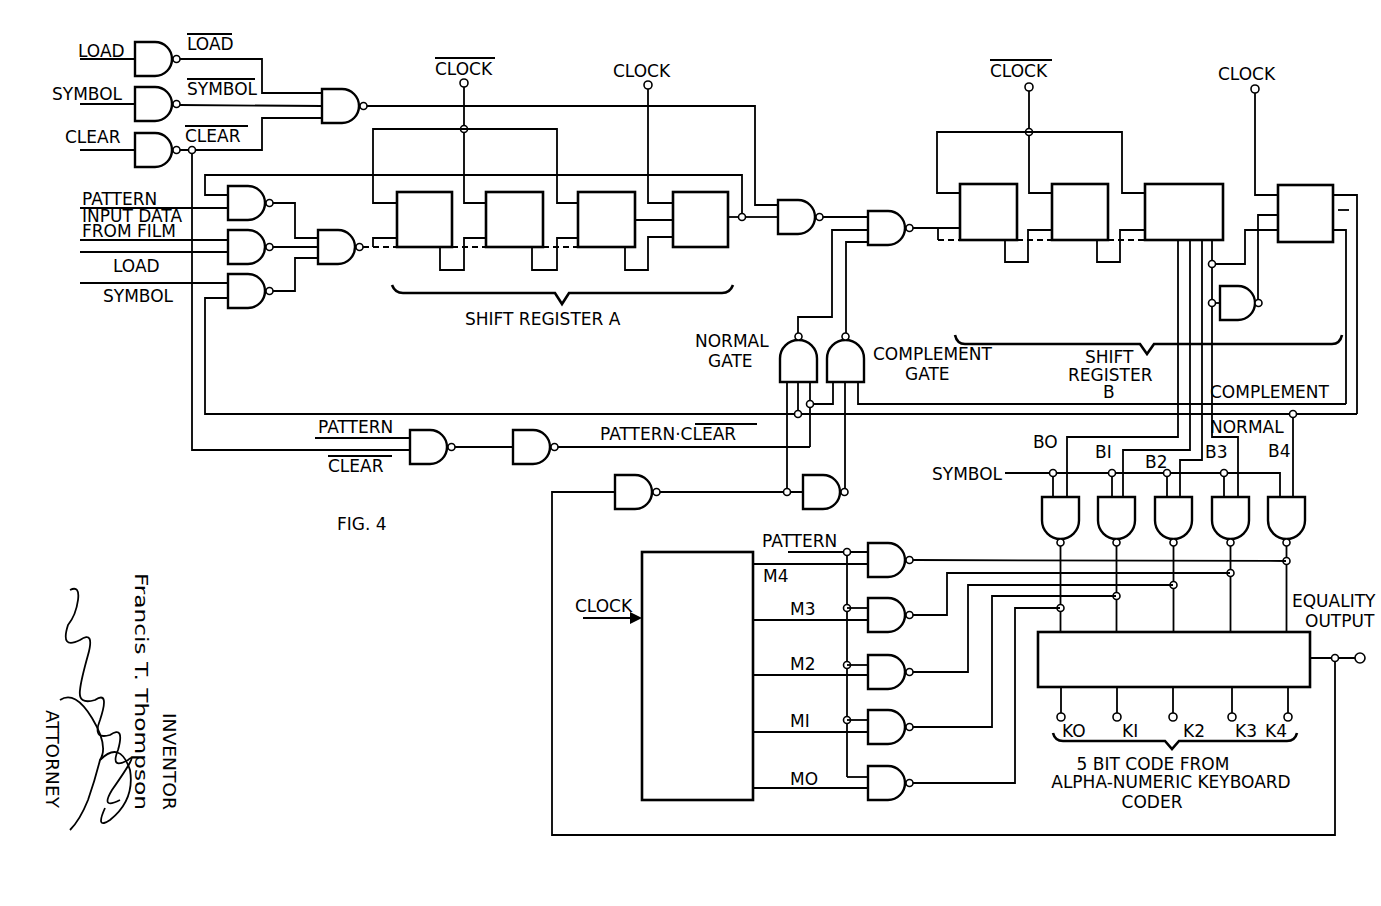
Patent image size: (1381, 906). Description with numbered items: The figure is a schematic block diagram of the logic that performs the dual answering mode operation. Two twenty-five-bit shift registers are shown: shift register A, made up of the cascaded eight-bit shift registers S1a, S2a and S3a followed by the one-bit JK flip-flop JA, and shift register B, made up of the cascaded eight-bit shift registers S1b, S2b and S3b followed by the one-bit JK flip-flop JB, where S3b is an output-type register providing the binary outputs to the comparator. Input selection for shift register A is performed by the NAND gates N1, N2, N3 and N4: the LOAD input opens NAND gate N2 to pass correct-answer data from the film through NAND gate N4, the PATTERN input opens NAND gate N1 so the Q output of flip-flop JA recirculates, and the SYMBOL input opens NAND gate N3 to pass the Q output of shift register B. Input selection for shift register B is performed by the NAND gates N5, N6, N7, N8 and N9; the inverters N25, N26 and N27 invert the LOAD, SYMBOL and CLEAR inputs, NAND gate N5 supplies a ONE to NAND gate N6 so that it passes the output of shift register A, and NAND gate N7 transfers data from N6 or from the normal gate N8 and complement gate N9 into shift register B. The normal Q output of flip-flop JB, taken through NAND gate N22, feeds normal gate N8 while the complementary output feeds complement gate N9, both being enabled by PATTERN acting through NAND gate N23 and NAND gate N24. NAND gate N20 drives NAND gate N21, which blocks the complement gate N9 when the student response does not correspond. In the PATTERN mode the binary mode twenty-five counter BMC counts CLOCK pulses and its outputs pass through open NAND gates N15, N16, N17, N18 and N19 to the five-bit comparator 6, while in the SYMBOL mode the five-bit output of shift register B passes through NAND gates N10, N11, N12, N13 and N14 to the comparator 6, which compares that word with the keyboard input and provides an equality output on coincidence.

The NAND gate N1 is at (250, 203).
The NAND gate N2 is at (250, 247).
The NAND gate N3 is at (250, 291).
The NAND gate N4 is at (340, 247).
The NAND gate N5 is at (344, 106).
The NAND gate N6 is at (800, 217).
The NAND gate N7 is at (890, 228).
The normal NAND gate N8 is at (798, 357).
The complement NAND gate N9 is at (845, 357).
The NAND gate N10 is at (1060, 521).
The NAND gate N11 is at (1116, 521).
The NAND gate N12 is at (1173, 521).
The NAND gate N13 is at (1230, 521).
The NAND gate N14 is at (1286, 521).
The NAND gate N15 is at (890, 560).
The NAND gate N16 is at (890, 615).
The NAND gate N17 is at (890, 672).
The NAND gate N18 is at (890, 727).
The NAND gate N19 is at (890, 783).
The NAND gate N20 is at (637, 492).
The NAND gate N21 is at (825, 492).
The NAND gate N22 is at (1241, 303).
The NAND gate N23 is at (432, 447).
The NAND gate N24 is at (535, 447).
The NAND gate N25 is at (157, 59).
The NAND gate N26 is at (157, 104).
The NAND gate N27 is at (157, 150).
The 8-bit shift register S1a is at (424, 219).
The 8-bit shift register S2a is at (514, 219).
The 8-bit shift register S3a is at (606, 219).
The JK flip-flop JA is at (700, 219).
The 8-bit shift register S1b is at (988, 212).
The 8-bit shift register S2b is at (1080, 212).
The 8-bit output shift register S3b is at (1184, 212).
The JK flip-flop JB is at (1313, 203).
The binary mode 25 counter BMC is at (642, 684).
The 5-bit comparator 6 is at (1254, 632).